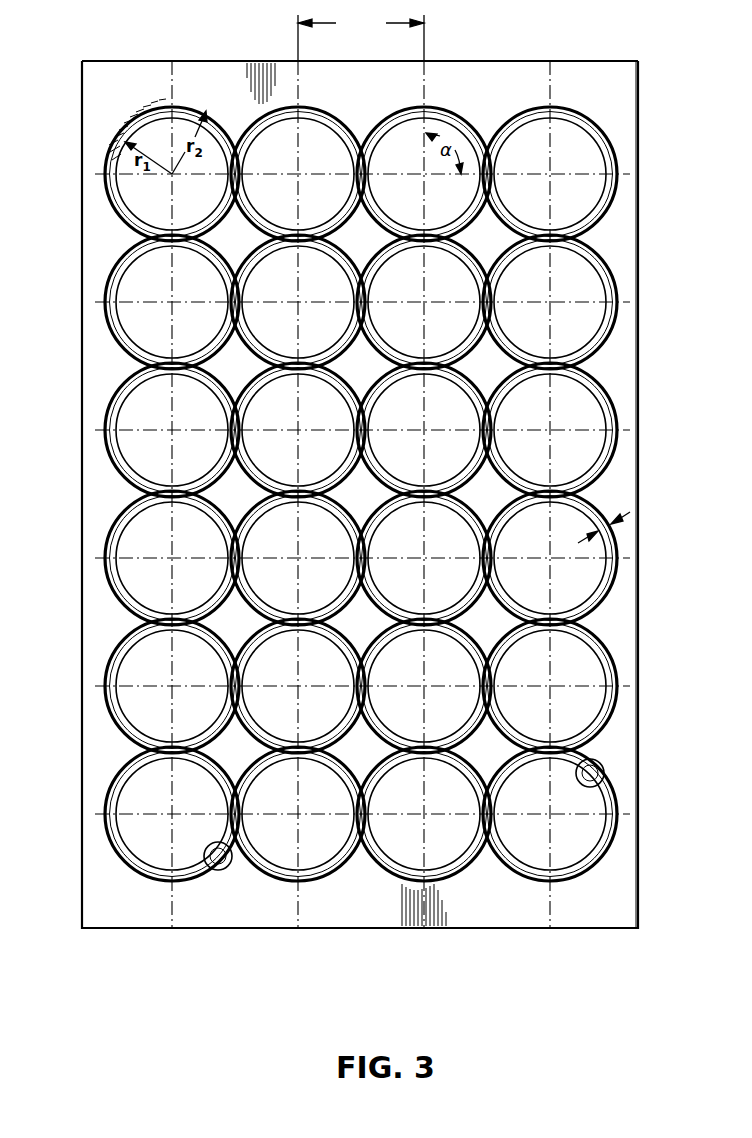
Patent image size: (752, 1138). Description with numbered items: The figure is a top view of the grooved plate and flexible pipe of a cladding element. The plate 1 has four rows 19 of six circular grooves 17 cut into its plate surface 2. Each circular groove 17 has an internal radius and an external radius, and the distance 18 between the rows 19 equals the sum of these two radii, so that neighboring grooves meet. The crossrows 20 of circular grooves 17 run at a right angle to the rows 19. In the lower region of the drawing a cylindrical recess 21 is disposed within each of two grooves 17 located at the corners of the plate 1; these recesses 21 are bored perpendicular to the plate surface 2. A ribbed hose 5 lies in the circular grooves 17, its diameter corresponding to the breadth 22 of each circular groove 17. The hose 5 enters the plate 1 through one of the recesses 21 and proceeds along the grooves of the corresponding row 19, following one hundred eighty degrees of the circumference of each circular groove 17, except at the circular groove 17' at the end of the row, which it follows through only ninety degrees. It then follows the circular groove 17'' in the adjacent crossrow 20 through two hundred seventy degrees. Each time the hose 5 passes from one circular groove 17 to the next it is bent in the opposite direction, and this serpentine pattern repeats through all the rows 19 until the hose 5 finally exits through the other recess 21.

The plate 1 is at (453, 928).
The plate surface 2 is at (498, 80).
The ribbed hose 5 is at (150, 876).
The circular groove 17 is at (133, 302).
The circular groove at the end of a row 17' is at (97, 129).
The circular groove in the adjacent row 17'' is at (241, 58).
The distance between the rows 18 is at (361, 37).
The row of circular grooves 19 is at (173, 563).
The crossrow of circular grooves 20 is at (622, 182).
The cylindrical recess 21 is at (222, 872).
The breadth of the circular groove 22 is at (608, 530).